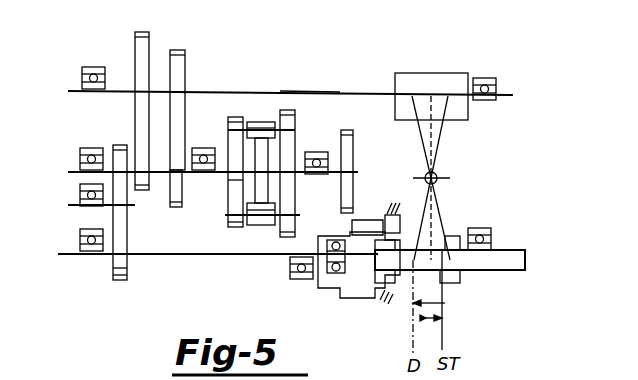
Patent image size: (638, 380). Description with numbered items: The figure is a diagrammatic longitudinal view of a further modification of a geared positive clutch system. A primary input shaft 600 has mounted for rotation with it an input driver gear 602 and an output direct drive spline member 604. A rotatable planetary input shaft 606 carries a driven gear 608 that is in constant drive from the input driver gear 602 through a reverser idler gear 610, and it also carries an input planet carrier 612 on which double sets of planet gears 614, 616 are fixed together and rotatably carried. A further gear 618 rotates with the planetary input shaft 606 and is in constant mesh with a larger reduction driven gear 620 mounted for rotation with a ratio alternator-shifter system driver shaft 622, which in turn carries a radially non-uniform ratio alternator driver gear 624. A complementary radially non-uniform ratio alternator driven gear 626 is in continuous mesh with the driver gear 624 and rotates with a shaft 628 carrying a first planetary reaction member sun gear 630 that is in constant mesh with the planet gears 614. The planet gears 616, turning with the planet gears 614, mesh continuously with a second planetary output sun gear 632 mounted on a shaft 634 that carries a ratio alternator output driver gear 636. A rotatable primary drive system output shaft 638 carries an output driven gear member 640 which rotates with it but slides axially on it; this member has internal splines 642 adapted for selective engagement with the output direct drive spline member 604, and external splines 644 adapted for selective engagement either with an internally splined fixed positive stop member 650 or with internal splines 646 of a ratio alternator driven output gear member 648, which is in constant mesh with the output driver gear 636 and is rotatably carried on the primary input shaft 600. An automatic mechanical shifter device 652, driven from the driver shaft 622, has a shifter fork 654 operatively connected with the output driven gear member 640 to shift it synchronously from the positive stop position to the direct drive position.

The primary input shaft 600 is at (68, 255).
The input driver gear 602 is at (130, 277).
The output direct drive spline member 604 is at (343, 280).
The planetary input shaft 606 is at (72, 172).
The driven gear 608 is at (115, 148).
The reverser idler gear 610 is at (115, 217).
The input planet carrier 612 is at (255, 238).
The planet gears 614 is at (223, 103).
The planet gears 616 is at (297, 112).
The further gear 618 is at (128, 193).
The reduction driven gear 620 is at (135, 109).
The ratio alternator-shifter system driver shaft 622 is at (250, 120).
The ratio alternator driver gear 624 is at (150, 48).
The ratio alternator driven gear 626 is at (186, 110).
The shaft 628 is at (233, 180).
The first planetary reaction member sun gear 630 is at (227, 193).
The second planetary output sun gear 632 is at (293, 186).
The shaft 634 is at (360, 173).
The ratio alternator output driver gear 636 is at (356, 110).
The primary drive system output shaft 638 is at (514, 250).
The output driven gear member 640 is at (432, 280).
The internal splines 642 is at (400, 277).
The external splines 644 is at (377, 297).
The internal splines 646 is at (372, 236).
The ratio alternator driven output gear member 648 is at (318, 283).
The fixed positive stop member 650 is at (418, 198).
The automatic mechanical shifter device 652 is at (430, 73).
The shifter fork 654 is at (440, 197).